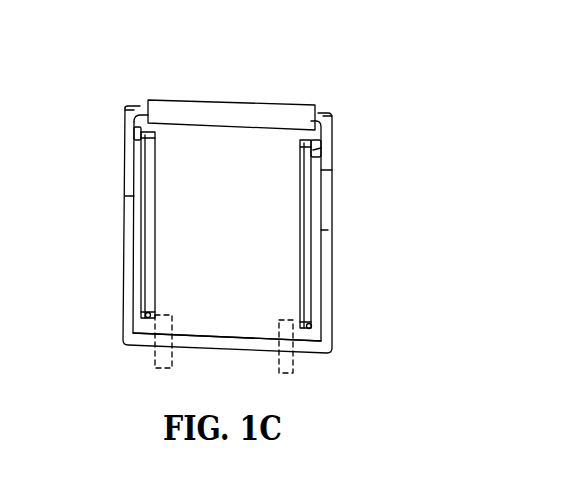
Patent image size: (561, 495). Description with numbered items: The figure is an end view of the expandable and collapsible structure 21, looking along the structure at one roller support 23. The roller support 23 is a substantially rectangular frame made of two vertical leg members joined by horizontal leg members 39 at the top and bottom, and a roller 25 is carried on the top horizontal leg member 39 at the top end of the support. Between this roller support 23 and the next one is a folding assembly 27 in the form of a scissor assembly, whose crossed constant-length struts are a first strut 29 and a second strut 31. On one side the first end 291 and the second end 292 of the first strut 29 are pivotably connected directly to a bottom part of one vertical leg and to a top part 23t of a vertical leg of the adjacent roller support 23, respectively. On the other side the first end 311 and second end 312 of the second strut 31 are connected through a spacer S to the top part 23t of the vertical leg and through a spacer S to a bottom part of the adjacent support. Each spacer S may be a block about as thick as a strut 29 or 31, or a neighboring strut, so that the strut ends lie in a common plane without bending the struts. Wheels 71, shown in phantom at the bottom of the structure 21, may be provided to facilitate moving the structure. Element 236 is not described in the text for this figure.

The expandable and collapsible structure 21 is at (285, 81).
The roller support 23 is at (340, 140).
The top part of vertical leg member 23t is at (125, 123).
The roller 25 is at (298, 104).
The folding assembly 27 is at (122, 197).
The first strut 29 is at (147, 226).
The first end of first strut 291 is at (137, 310).
The second end of first strut 292 is at (137, 145).
The second strut 31 is at (157, 187).
The first end of second strut 311 is at (155, 308).
The second end of second strut 312 is at (158, 143).
The housing bottom 236 is at (123, 332).
The horizontal leg member 39 is at (138, 106).
The wheel 71 is at (153, 362).
The spacer S is at (321, 148).